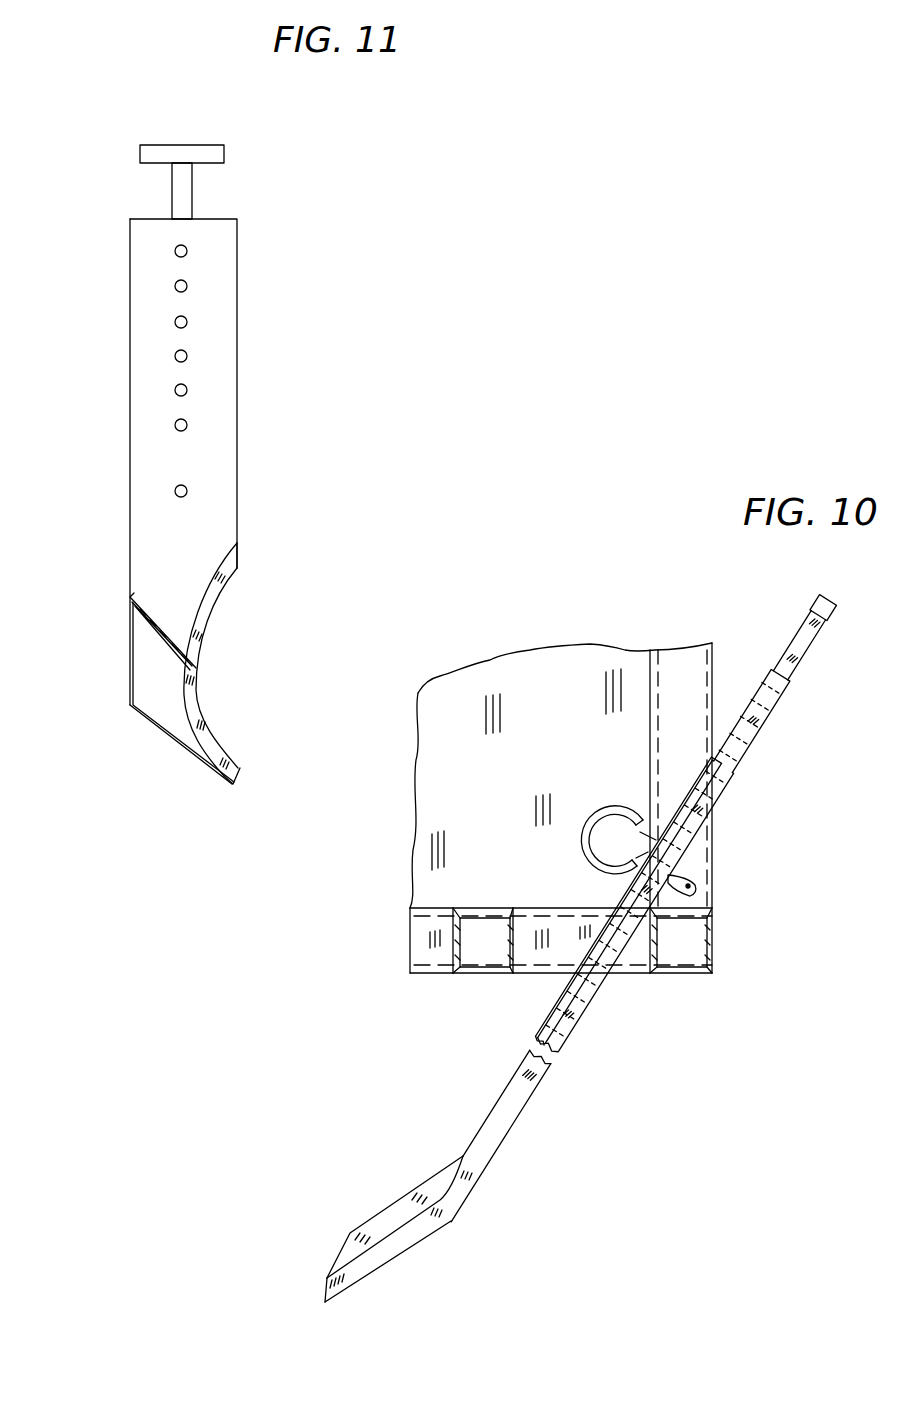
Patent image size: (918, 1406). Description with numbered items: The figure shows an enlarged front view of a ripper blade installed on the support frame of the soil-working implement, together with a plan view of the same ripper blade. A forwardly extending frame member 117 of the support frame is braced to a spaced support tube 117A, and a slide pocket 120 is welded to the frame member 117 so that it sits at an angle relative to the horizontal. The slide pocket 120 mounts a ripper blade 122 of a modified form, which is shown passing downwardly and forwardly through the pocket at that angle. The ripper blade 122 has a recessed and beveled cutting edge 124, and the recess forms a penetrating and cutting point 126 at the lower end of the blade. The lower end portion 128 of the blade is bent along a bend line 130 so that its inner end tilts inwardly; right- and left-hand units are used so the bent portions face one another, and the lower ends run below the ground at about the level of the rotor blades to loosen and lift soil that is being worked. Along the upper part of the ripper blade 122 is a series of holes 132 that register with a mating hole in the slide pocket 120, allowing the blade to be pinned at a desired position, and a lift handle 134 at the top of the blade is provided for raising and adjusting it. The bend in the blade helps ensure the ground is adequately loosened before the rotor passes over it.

In FIG. 10, the frame member 117 is at (677, 975).
In FIG. 10, the support tube 117A is at (490, 975).
In FIG. 10, the slide pocket 120 is at (613, 898).
In FIG. 11, the ripper blade 122 is at (222, 388).
In FIG. 10, the ripper blade 122 is at (556, 1058).
In FIG. 11, the cutting edge 124 is at (193, 641).
In FIG. 10, the cutting edge 124 is at (452, 1195).
In FIG. 11, the cutting point 126 is at (241, 774).
In FIG. 10, the cutting point 126 is at (325, 1302).
In FIG. 11, the lower end portion 128 is at (174, 707).
In FIG. 10, the lower end portion 128 is at (383, 1226).
In FIG. 11, the bend line 130 is at (142, 612).
In FIG. 11, the holes 132 is at (174, 252).
In FIG. 11, the lift handle 134 is at (219, 145).
In FIG. 10, the lift handle 134 is at (817, 605).